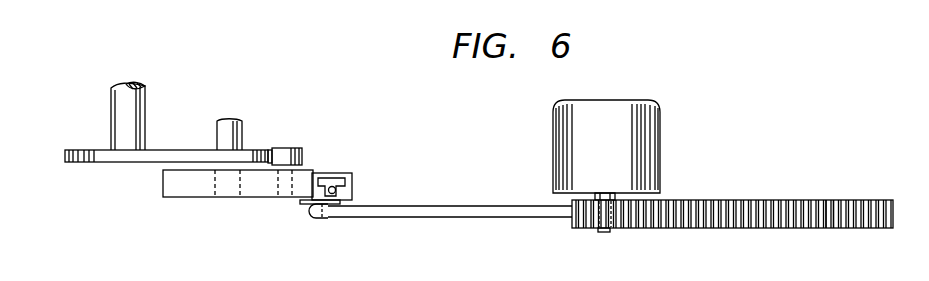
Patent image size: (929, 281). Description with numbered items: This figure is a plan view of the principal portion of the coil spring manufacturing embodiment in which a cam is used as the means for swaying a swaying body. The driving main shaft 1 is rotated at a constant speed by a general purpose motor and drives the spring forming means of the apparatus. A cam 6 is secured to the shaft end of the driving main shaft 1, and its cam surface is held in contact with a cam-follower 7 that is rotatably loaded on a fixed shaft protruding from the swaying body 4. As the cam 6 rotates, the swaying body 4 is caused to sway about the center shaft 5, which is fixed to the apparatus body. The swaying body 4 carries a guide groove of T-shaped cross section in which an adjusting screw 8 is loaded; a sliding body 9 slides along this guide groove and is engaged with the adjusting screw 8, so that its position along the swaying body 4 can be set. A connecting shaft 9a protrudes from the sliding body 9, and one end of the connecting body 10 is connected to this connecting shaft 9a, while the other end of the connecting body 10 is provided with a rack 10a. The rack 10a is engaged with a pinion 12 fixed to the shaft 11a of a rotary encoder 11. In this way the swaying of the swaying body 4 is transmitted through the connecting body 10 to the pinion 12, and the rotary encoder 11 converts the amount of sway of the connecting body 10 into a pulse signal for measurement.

The driving main shaft 1 is at (122, 100).
The swaying body 4 is at (190, 188).
The center shaft 5 is at (231, 136).
The cam 6 is at (176, 151).
The cam-follower 7 is at (282, 156).
The adjusting screw 8 is at (332, 187).
The sliding body 9 is at (350, 184).
The connecting shaft 9a is at (322, 218).
The connecting body 10 is at (746, 201).
The rack 10a is at (836, 204).
The rotary encoder 11 is at (563, 122).
The shaft of rotary encoder 11a is at (604, 233).
The pinion 12 is at (582, 230).